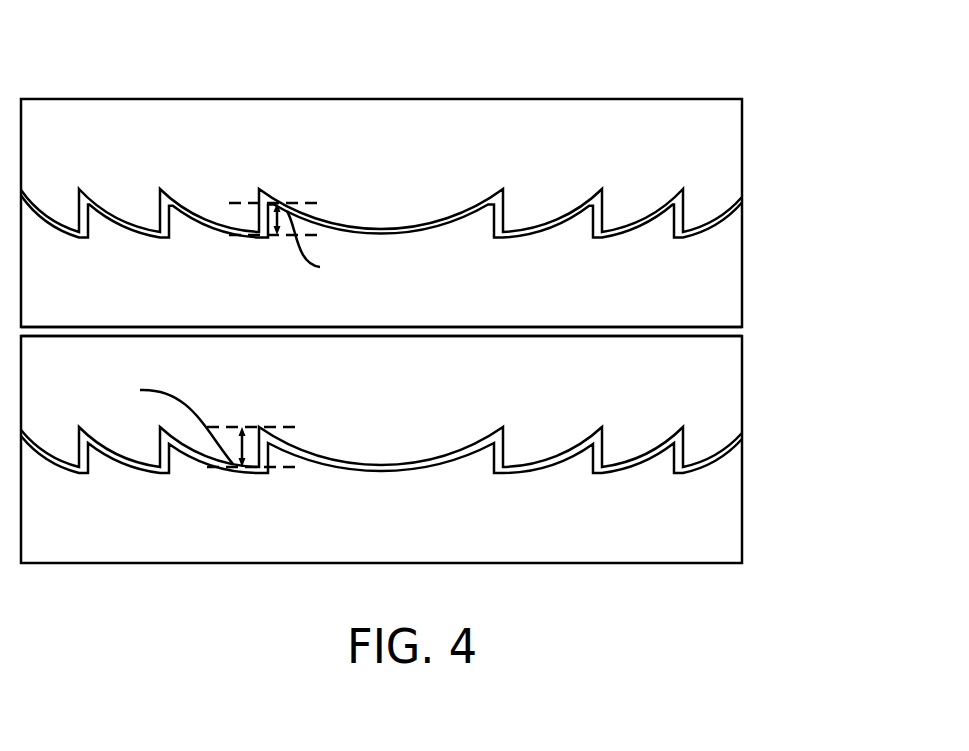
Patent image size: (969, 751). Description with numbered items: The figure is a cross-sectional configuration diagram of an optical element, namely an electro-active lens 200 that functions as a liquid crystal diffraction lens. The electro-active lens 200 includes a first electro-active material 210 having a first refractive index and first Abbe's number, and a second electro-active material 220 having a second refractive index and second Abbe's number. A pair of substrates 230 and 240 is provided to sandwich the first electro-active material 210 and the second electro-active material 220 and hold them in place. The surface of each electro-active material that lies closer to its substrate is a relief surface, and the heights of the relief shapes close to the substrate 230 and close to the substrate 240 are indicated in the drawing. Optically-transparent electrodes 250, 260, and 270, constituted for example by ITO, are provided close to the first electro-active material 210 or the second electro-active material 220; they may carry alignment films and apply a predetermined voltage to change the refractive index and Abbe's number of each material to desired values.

The electro-active lens 200 is at (748, 64).
The first electro-active material 210 is at (568, 248).
The second electro-active material 220 is at (570, 417).
The substrate 230 is at (703, 155).
The substrate 240 is at (698, 533).
The optically-transparent electrode 250 is at (743, 200).
The optically-transparent electrode 260 is at (742, 328).
The optically-transparent electrode 270 is at (742, 440).